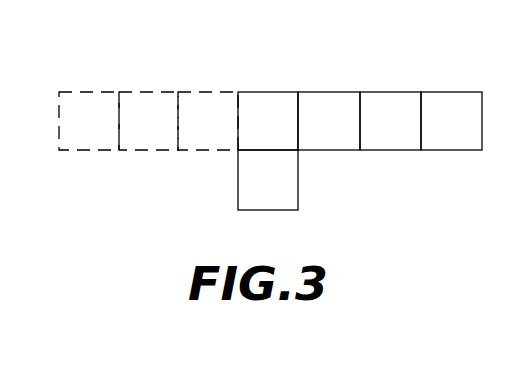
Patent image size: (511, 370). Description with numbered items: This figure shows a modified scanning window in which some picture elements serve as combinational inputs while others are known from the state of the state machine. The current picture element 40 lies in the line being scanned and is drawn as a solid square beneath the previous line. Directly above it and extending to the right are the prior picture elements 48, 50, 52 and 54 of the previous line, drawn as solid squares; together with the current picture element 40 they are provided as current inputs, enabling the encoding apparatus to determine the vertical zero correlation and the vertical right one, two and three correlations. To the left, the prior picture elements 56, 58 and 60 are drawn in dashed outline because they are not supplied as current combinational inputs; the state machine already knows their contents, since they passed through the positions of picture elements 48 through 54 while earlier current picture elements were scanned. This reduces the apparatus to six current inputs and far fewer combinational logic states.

The current picture element 40 is at (287, 203).
The prior picture element 48 is at (268, 92).
The prior picture element 50 is at (327, 92).
The prior picture element 52 is at (390, 92).
The prior picture element 54 is at (461, 92).
The prior picture element 56 is at (85, 92).
The prior picture element 58 is at (146, 92).
The prior picture element 60 is at (206, 92).